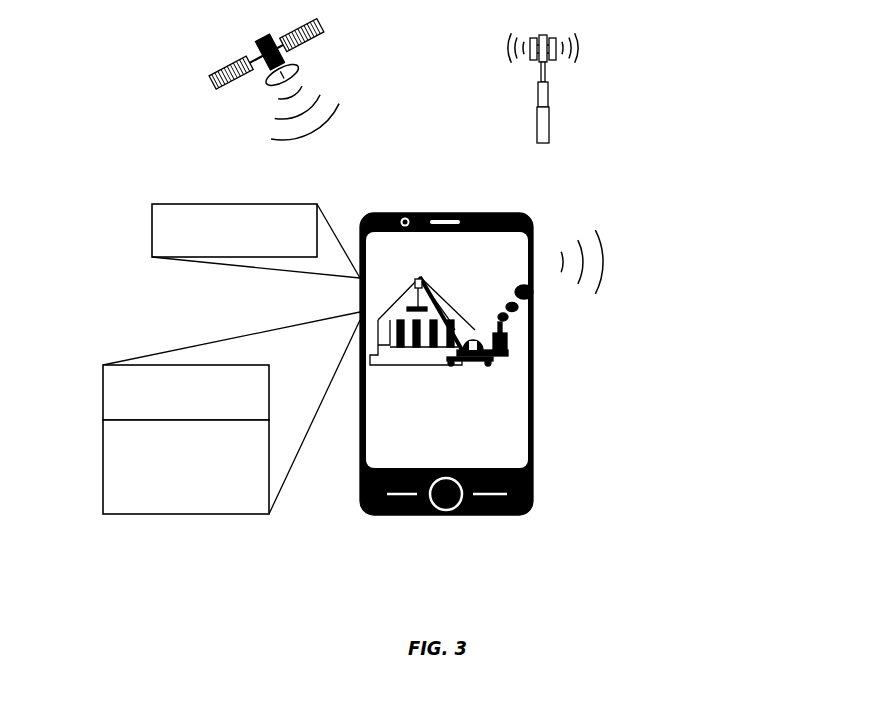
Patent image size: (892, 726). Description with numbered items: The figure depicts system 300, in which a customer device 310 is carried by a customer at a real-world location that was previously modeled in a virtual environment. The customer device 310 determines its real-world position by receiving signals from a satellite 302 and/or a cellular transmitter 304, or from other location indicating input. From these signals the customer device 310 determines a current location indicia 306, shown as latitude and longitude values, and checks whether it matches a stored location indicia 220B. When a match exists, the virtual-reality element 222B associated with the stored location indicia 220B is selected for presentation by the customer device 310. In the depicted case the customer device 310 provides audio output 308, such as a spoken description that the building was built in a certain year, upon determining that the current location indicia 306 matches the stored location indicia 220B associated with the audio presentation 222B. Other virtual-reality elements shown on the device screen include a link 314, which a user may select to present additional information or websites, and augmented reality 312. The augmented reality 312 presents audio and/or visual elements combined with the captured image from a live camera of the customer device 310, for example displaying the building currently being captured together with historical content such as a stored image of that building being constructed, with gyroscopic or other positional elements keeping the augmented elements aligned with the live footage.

The system 300 is at (801, 48).
The satellite 302 is at (232, 68).
The cellular transmitter 304 is at (543, 93).
The current location indicia 306 is at (237, 203).
The audio output 308 is at (807, 219).
The customer device 310 is at (481, 212).
The augmented reality 312 is at (513, 372).
The link 314 is at (506, 237).
The stored location indicia 220B is at (103, 393).
The virtual-reality element 222B is at (103, 465).